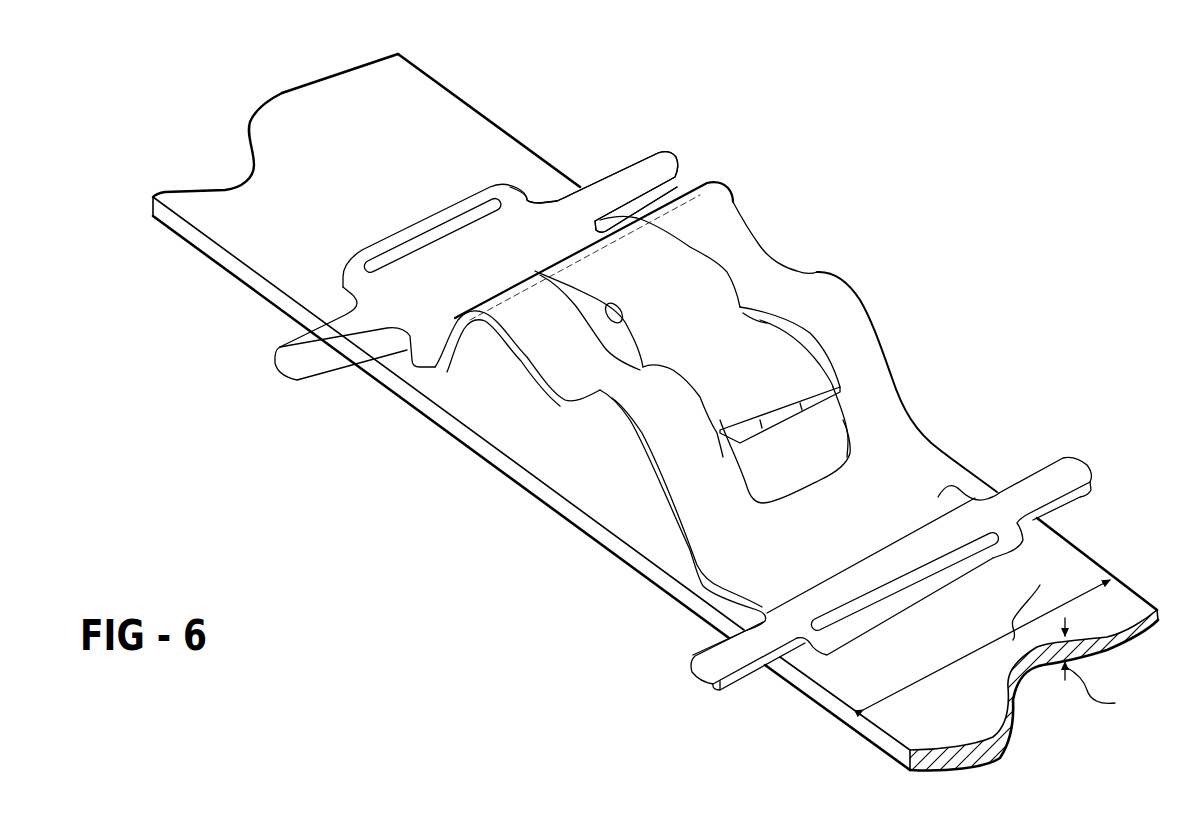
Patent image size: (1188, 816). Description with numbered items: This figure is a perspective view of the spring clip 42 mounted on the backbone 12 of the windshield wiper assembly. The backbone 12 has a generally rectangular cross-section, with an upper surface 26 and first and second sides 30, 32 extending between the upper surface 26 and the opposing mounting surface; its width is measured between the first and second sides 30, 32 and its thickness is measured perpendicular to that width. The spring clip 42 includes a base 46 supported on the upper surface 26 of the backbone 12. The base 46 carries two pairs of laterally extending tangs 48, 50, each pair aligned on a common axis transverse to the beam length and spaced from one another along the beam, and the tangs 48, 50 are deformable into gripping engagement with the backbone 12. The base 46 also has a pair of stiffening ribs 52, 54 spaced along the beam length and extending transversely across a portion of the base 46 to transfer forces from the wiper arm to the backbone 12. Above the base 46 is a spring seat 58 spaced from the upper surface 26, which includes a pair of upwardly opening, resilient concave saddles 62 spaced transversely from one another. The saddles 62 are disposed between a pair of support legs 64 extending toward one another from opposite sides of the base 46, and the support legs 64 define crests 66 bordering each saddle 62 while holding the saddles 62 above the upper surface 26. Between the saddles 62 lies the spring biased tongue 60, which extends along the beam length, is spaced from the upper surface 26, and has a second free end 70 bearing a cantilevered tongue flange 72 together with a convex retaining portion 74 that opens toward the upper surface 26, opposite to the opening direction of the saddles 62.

The backbone 12 is at (629, 411).
The upper surface 26 is at (158, 217).
The first side 30 is at (237, 267).
The second side 32 is at (470, 100).
The spring clip 42 is at (650, 408).
The base 46 is at (528, 200).
The tangs 48 is at (633, 165).
The tangs 50 is at (1057, 467).
The stiffening rib 52 is at (440, 232).
The stiffening rib 54 is at (898, 577).
The spring seat 58 is at (758, 427).
The spring biased tongue 60 is at (716, 303).
The concave saddles 62 is at (550, 358).
The support legs 64 is at (447, 353).
The crests 66 is at (716, 303).
The second free end 70 is at (772, 368).
The tongue flange 72 is at (803, 407).
The convex retaining portion 74 is at (632, 325).